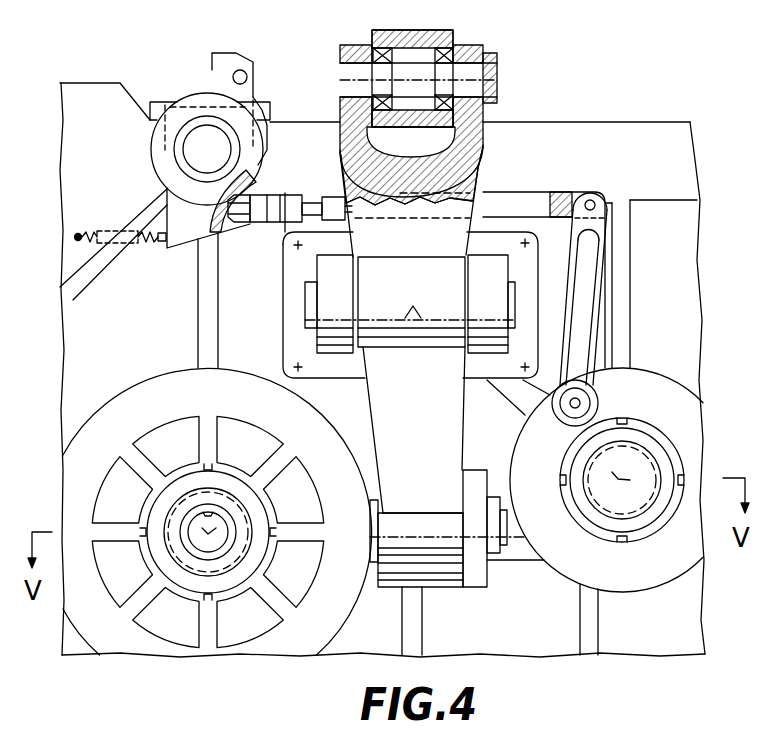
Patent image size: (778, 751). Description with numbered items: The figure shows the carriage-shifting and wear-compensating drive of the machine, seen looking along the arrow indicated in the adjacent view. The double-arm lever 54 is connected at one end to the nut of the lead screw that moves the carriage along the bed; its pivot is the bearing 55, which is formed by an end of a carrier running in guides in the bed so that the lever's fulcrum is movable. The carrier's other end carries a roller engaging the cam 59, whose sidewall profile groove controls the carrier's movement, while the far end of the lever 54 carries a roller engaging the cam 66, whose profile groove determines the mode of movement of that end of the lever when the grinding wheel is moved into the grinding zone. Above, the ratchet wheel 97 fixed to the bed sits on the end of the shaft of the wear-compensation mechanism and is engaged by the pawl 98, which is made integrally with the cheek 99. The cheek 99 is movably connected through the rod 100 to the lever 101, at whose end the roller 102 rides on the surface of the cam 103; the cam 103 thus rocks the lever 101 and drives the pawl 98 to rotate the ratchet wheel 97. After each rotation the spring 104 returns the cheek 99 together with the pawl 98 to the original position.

The double-arm lever 54 is at (487, 157).
The bearing 55 is at (363, 270).
The cam 59 is at (573, 570).
The cam 66 is at (337, 615).
The ratchet wheel 97 is at (182, 93).
The pawl 98 is at (215, 80).
The cheek 99 is at (183, 238).
The rod 100 is at (536, 201).
The lever 101 is at (602, 200).
The roller 102 is at (598, 400).
The cam 103 is at (575, 434).
The spring 104 is at (92, 230).